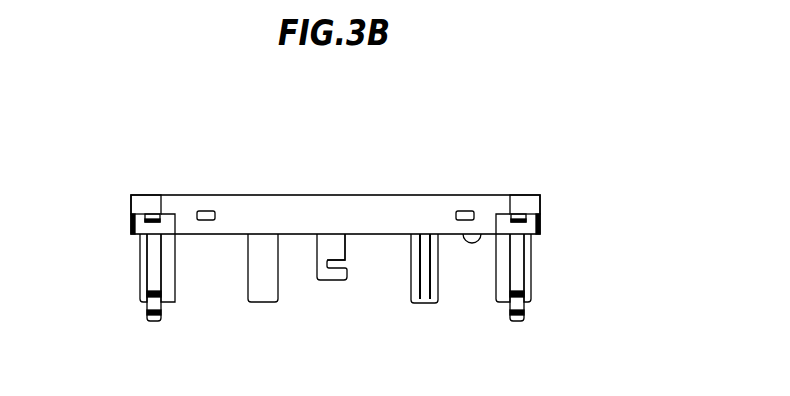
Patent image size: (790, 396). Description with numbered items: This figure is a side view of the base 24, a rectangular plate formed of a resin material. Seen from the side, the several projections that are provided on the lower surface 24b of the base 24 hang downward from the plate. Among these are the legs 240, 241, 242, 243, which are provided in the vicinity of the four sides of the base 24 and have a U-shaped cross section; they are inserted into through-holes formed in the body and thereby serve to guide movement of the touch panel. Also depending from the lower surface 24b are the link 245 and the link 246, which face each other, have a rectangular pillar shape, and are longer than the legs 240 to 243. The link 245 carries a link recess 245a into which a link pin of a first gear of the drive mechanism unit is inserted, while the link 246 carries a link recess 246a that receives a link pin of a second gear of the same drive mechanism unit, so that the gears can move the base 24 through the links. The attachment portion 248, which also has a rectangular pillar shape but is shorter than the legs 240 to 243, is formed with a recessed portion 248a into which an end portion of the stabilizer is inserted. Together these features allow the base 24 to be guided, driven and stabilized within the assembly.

The base 24 is at (594, 139).
The lower surface 24b is at (480, 238).
The leg 240 is at (500, 292).
The leg 241 is at (423, 292).
The leg 242 is at (170, 250).
The leg 243 is at (265, 292).
The link 245 is at (517, 262).
The link recess 245a is at (518, 302).
The link 246 is at (153, 254).
The link recess 246a is at (147, 300).
The attachment portion 248 is at (335, 244).
The recessed portion 248a is at (333, 249).